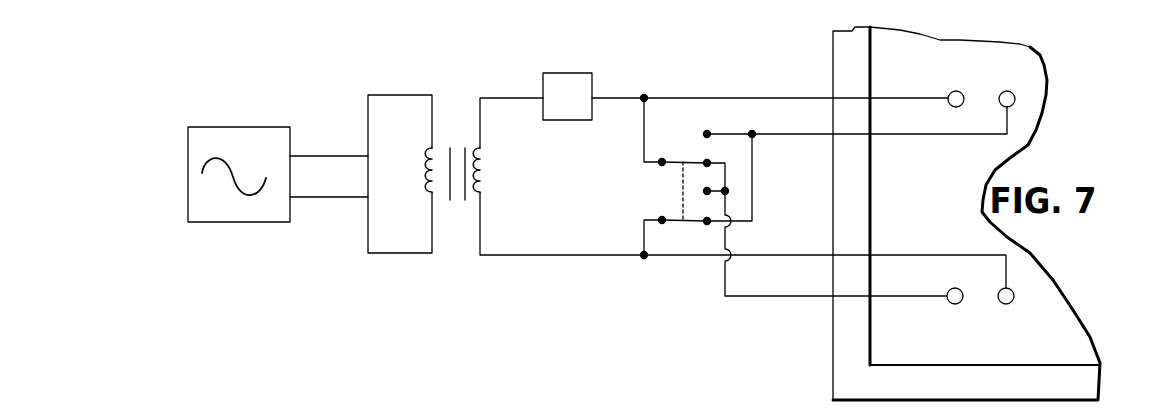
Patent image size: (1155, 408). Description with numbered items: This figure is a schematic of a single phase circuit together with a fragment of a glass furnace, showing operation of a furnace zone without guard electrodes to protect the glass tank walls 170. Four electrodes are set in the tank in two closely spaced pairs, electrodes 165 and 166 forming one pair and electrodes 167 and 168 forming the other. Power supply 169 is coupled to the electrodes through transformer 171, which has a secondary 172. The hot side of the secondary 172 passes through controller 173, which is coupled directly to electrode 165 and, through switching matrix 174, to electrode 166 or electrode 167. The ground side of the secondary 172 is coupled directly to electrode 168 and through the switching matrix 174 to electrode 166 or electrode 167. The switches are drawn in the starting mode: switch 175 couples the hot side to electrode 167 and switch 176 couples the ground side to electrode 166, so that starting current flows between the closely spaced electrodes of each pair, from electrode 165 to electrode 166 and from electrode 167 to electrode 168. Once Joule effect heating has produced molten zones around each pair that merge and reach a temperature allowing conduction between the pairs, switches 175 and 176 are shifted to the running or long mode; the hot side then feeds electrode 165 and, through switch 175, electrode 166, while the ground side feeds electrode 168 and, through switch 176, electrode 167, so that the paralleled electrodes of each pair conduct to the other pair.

The electrode 165 is at (955, 90).
The electrode 166 is at (1008, 90).
The electrode 167 is at (950, 303).
The electrode 168 is at (1006, 304).
The power supply 169 is at (242, 126).
The glass tank walls 170 is at (838, 340).
The transformer 171 is at (457, 112).
The secondary 172 is at (485, 187).
The controller 173 is at (562, 73).
The switching matrix 174 is at (677, 187).
The switch 175 is at (678, 161).
The switch 176 is at (677, 222).